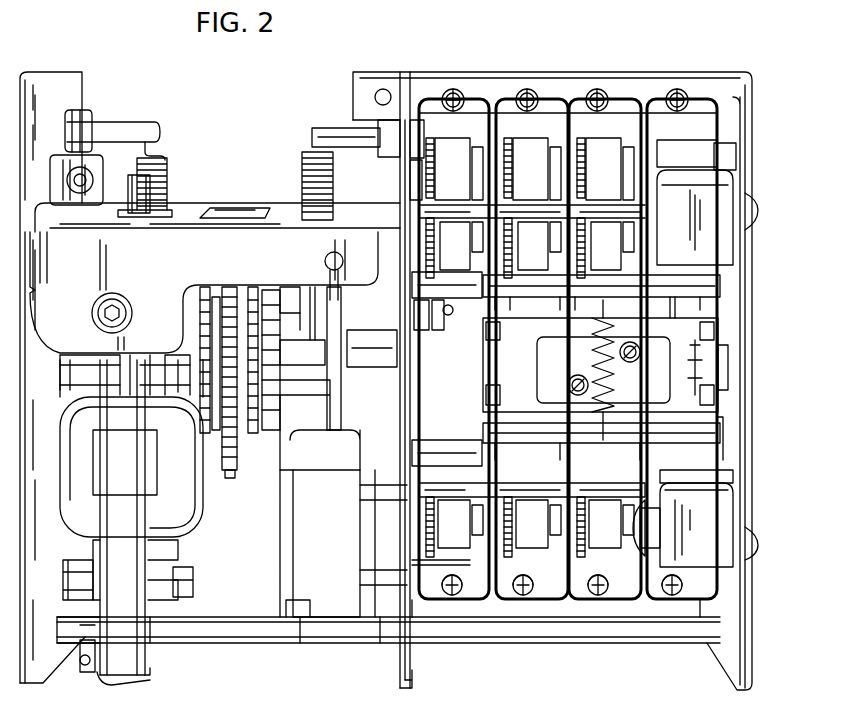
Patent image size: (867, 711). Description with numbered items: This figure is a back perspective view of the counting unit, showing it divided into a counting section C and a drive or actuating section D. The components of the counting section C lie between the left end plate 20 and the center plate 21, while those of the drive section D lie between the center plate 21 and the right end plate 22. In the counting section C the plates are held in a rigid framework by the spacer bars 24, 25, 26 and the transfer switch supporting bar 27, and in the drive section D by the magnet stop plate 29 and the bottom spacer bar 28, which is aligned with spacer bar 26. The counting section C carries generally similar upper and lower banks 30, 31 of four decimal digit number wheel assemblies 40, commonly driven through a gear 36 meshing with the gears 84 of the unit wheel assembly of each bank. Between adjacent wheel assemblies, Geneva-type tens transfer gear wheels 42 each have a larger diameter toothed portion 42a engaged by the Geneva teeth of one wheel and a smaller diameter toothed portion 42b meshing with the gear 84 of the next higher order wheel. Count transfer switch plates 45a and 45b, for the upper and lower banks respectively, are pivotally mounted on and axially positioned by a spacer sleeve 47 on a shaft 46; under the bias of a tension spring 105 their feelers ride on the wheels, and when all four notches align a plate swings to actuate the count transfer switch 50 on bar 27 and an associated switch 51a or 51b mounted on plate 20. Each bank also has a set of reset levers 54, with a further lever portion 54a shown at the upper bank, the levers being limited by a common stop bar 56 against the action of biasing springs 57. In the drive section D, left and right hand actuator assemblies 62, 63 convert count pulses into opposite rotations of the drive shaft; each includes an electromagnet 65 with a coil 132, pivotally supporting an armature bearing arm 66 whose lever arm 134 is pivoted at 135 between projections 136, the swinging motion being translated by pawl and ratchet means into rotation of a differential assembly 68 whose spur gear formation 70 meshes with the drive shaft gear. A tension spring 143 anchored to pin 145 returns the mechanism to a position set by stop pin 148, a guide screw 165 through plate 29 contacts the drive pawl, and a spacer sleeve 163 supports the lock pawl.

The left end plate 20 is at (747, 76).
The center plate 21 is at (406, 72).
The right end plate 22 is at (50, 72).
The spacer bar 24 is at (660, 72).
The spacer bar 25 is at (460, 615).
The spacer bar 26 is at (531, 632).
The transfer switch supporting bar 27 is at (726, 373).
The bottom spacer bar 28 is at (378, 632).
The magnet stop plate 29 is at (272, 200).
The upper bank 30 is at (750, 137).
The lower bank 31 is at (757, 483).
The gear 36 is at (430, 325).
The number wheel assembly 40 is at (436, 120).
The gear wheel 42 is at (483, 140).
The larger diameter toothed portion 42a is at (470, 195).
The smaller diameter toothed portion 42b is at (512, 197).
The count transfer switch plate 45a is at (722, 291).
The count transfer switch plate 45b is at (608, 450).
The shaft 46 is at (680, 292).
The spacer sleeve 47 is at (462, 297).
The count transfer switch 50 is at (636, 386).
The switch 51a is at (722, 245).
The switch 51b is at (720, 513).
The lever 54 is at (473, 97).
The switch frame 54a is at (650, 97).
The stop bar 56 is at (603, 208).
The biasing spring 57 is at (568, 72).
The left hand actuator assembly 62 is at (298, 632).
The right hand actuator assembly 63 is at (184, 669).
The electromagnet 65 is at (180, 550).
The armature bearing arm 66 is at (130, 505).
The differential assembly 68 is at (243, 330).
The spur gear formation 70 is at (228, 478).
The gear 84 is at (428, 243).
The tension spring 105 is at (590, 355).
The coil 132 is at (70, 500).
The lever arm 134 is at (95, 412).
The pivot 135 is at (85, 645).
The projection 136 is at (98, 678).
The tension spring 143 is at (163, 160).
The anchor pin 145 is at (118, 120).
The stop pin 148 is at (122, 297).
The spacer sleeve 163 is at (390, 352).
The guide screw 165 is at (160, 185).
The counting section C is at (586, 63).
The drive section D is at (206, 90).